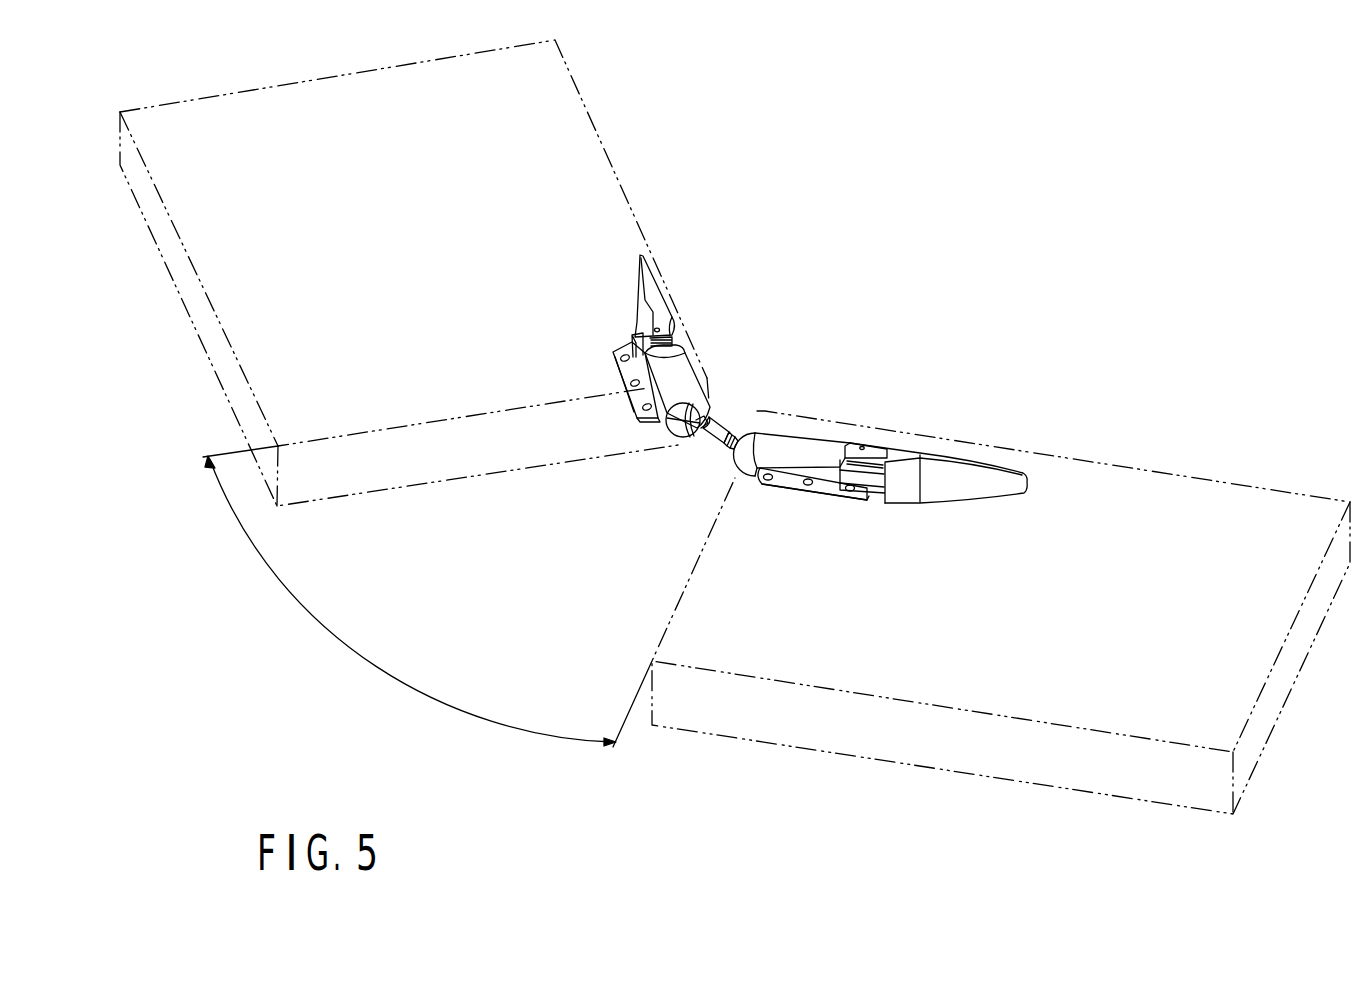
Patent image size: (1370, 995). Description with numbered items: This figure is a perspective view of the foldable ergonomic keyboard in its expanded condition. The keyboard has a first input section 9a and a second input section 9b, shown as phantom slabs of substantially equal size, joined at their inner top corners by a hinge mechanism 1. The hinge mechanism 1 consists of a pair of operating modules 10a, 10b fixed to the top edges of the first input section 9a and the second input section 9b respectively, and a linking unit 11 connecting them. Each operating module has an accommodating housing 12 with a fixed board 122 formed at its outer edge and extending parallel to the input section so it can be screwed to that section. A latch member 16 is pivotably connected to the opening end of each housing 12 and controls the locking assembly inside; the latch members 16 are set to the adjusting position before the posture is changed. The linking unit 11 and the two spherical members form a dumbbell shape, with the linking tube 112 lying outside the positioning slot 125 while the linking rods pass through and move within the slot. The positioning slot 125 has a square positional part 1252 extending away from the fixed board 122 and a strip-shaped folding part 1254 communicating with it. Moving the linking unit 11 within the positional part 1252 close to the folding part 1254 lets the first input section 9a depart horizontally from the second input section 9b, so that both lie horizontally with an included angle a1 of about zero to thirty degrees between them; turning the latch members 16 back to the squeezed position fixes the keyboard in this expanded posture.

The hinge mechanism 1 is at (835, 332).
The first input section 9a is at (617, 150).
The second input section 9b is at (1215, 474).
The operating module 10a is at (712, 351).
The operating module 10b is at (811, 445).
The linking unit 11 is at (733, 416).
The accommodating housing 12 is at (823, 452).
The latch member 16 is at (668, 280).
The linking tube 112 is at (728, 440).
The fixed board 122 is at (785, 492).
The positioning slot 125 is at (633, 483).
The positional part 1252 is at (700, 436).
The folding part 1254 is at (672, 432).
The included angle a1 is at (427, 596).